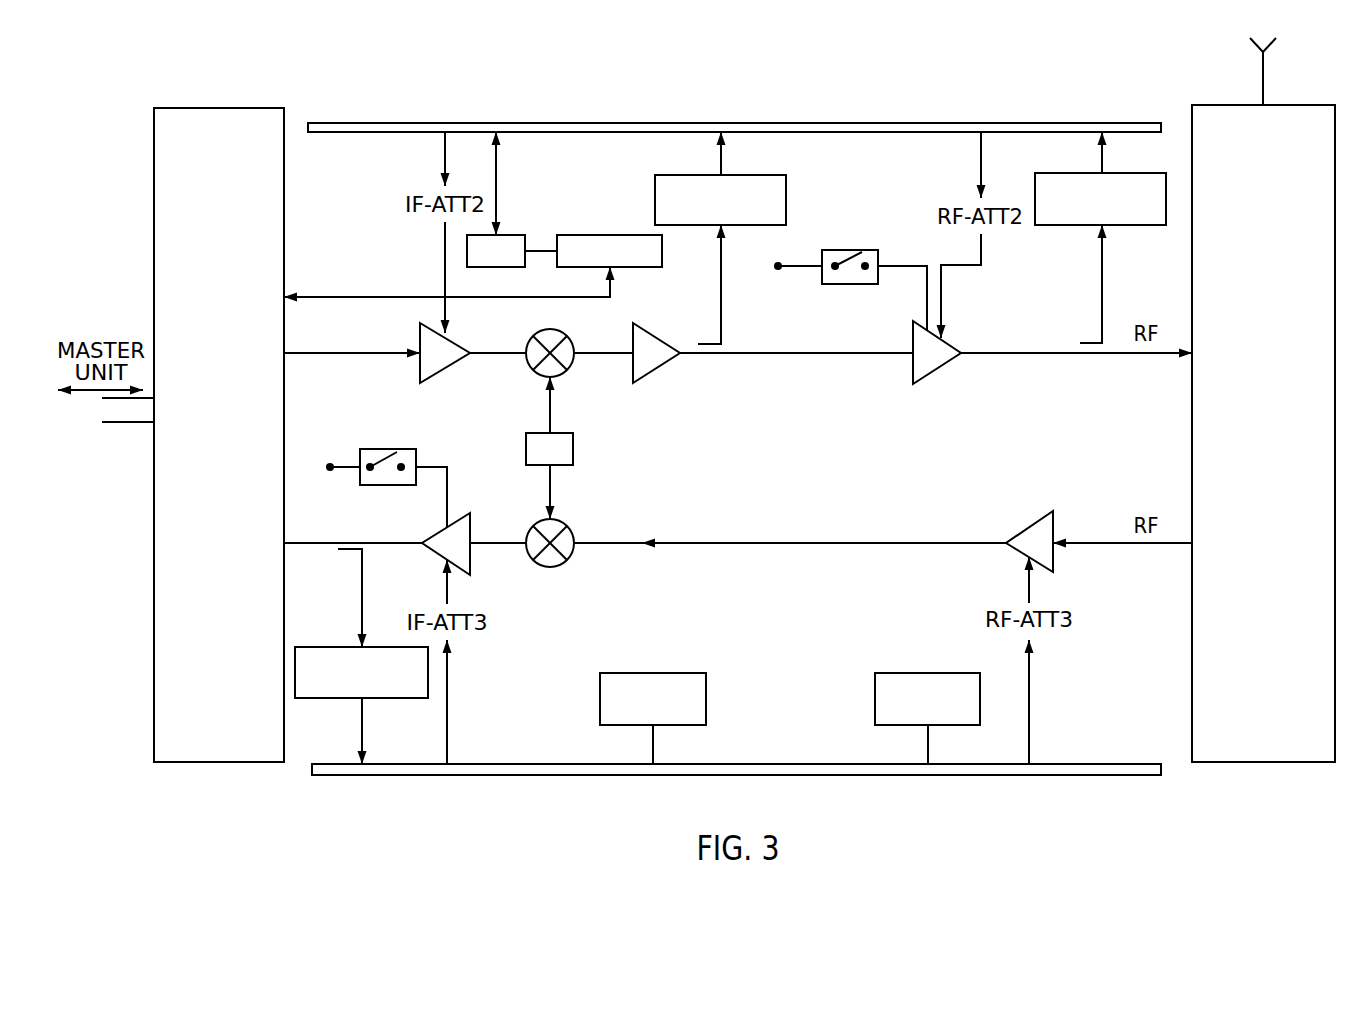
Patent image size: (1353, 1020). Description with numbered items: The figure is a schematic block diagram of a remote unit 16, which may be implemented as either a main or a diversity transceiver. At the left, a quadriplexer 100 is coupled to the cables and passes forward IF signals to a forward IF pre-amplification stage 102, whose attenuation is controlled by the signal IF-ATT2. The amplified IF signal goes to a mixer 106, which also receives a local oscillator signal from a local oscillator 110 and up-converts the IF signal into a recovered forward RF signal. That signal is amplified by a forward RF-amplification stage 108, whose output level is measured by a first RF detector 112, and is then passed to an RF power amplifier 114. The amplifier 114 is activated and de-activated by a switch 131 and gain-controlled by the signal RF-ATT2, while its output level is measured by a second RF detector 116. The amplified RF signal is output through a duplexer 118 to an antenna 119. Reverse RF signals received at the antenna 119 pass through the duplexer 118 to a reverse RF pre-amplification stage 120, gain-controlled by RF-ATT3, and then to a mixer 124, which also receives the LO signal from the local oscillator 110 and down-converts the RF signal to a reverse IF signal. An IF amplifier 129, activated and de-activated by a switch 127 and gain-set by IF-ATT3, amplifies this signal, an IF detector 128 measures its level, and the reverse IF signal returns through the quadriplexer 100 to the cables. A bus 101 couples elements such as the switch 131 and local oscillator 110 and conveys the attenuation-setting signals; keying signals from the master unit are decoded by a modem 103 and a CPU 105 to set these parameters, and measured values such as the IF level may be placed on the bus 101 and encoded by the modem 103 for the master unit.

The remote unit 16 is at (105, 822).
The quadriplexer 100 is at (215, 108).
The bus 101 is at (826, 123).
The forward IF pre-amplification stage 102 is at (440, 375).
The modem 103 is at (627, 267).
The central processing unit (CPU) 105 is at (508, 235).
The mixer 106 is at (562, 375).
The forward RF-amplification stage 108 is at (653, 375).
The local oscillator 110 is at (558, 465).
The first RF detector 112 is at (746, 175).
The RF power amplifier 114 is at (933, 372).
The second RF detector 116 is at (1123, 173).
The duplexer 118 is at (1278, 762).
The antenna 119 is at (1263, 73).
The reverse RF pre-amplification stage 120 is at (1035, 522).
The mixer 124 is at (552, 569).
The switch 127 is at (380, 449).
The IF detector 128 is at (347, 647).
The IF amplifier 129 is at (444, 529).
The switch 131 is at (850, 284).